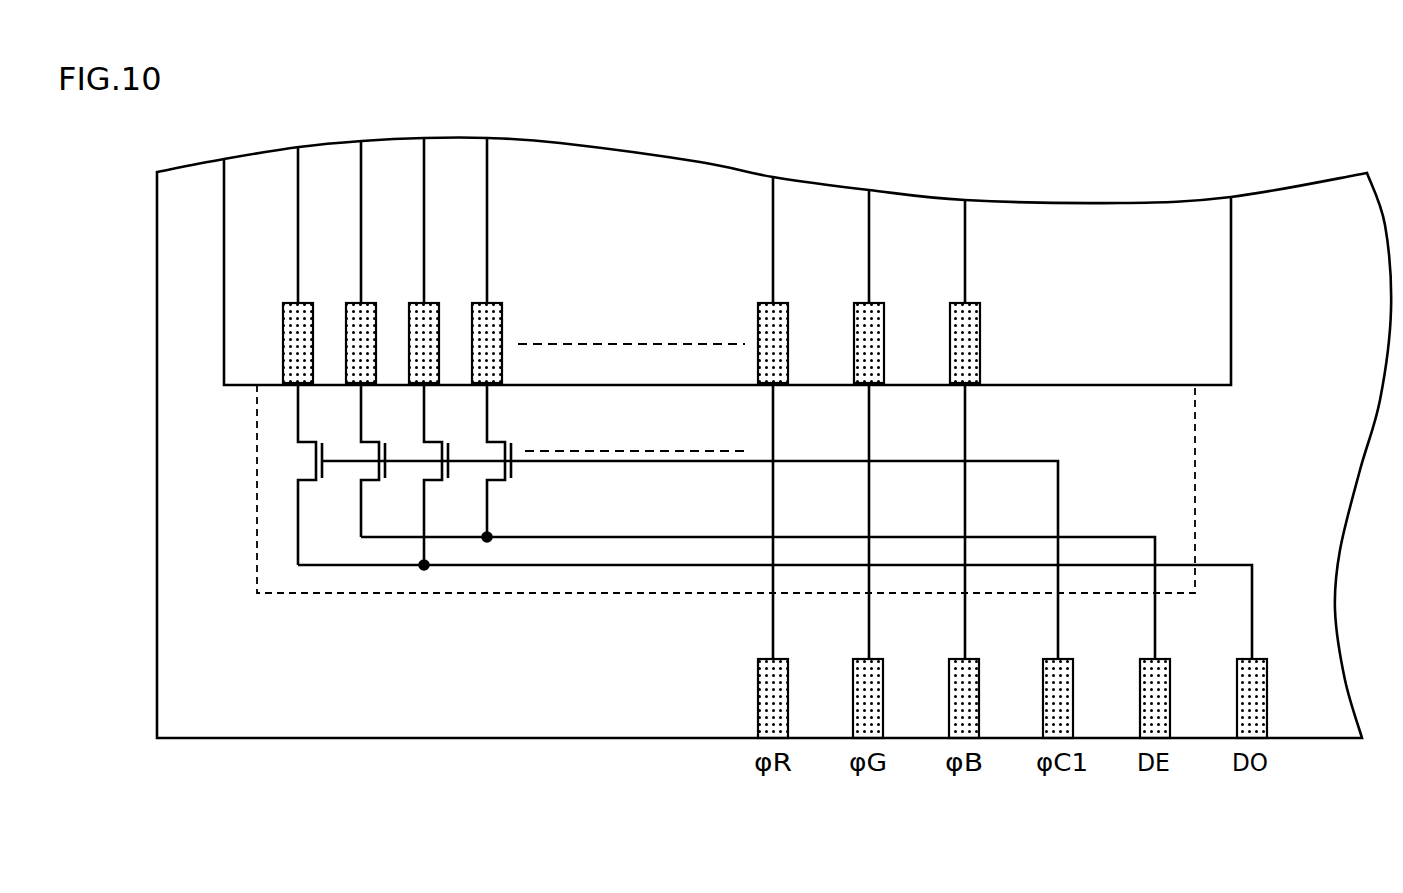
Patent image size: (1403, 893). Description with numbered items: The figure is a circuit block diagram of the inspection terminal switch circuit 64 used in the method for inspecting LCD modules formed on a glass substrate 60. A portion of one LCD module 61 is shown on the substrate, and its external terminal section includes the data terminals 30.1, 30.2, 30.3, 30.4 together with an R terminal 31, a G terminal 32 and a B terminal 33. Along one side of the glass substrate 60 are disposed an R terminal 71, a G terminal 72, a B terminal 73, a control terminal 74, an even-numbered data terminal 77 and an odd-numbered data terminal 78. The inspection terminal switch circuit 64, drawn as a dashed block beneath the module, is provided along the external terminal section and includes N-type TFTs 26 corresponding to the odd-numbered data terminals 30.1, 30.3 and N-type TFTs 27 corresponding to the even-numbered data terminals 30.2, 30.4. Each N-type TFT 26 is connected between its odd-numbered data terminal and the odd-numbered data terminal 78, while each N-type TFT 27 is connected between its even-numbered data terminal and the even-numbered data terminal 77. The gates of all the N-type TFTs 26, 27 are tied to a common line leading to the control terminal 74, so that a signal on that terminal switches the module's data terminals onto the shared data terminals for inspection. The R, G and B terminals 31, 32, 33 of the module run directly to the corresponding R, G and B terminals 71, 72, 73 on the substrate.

The glass substrate 60 is at (157, 228).
The LCD module 61 is at (224, 270).
The data terminal 30.1 is at (312, 317).
The data terminal 30.2 is at (375, 317).
The data terminal 30.3 is at (438, 317).
The data terminal 30.4 is at (501, 317).
The R terminal 31 is at (783, 317).
The G terminal 32 is at (879, 317).
The B terminal 33 is at (975, 317).
The N-type TFT 26 is at (318, 479).
The N-type TFT 27 is at (381, 479).
The inspection terminal switch circuit 64 is at (257, 469).
The R terminal 71 is at (783, 674).
The G terminal 72 is at (879, 674).
The B terminal 73 is at (975, 674).
The control terminal 74 is at (1069, 674).
The even-numbered data terminal 77 is at (1166, 674).
The odd-numbered data terminal 78 is at (1263, 674).